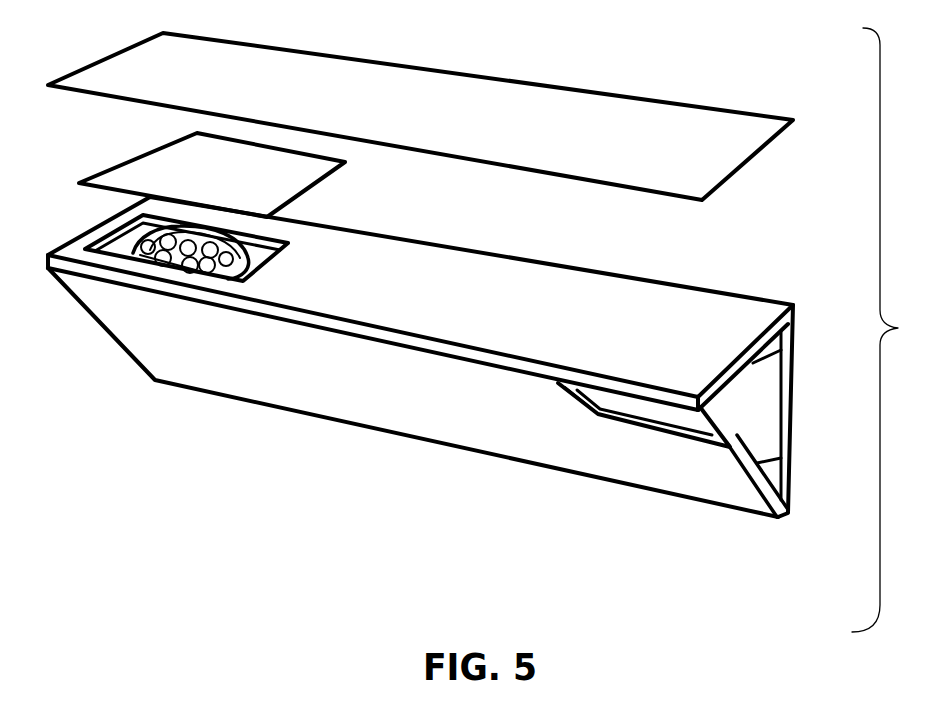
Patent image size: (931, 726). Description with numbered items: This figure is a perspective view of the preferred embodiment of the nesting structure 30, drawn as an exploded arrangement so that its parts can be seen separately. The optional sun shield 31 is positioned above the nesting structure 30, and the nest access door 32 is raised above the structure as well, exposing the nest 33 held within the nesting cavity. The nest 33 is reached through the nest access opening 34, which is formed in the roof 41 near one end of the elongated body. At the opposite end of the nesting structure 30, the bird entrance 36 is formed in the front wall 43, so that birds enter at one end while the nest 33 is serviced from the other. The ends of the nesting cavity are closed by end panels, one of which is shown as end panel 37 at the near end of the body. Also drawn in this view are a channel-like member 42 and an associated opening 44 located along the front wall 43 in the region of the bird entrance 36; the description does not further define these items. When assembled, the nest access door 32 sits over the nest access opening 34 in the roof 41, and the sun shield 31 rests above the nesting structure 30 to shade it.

The nesting structure 30 is at (110, 555).
The sun shield 31 is at (637, 117).
The nest access door 32 is at (130, 175).
The nest 33 is at (183, 262).
The nest access opening 34 is at (243, 290).
The bird entrance 36 is at (578, 412).
The end panel 37 is at (755, 400).
The roof 41 is at (678, 302).
The channel member 42 is at (628, 418).
The front wall 43 is at (435, 410).
The slot opening 44 is at (572, 393).